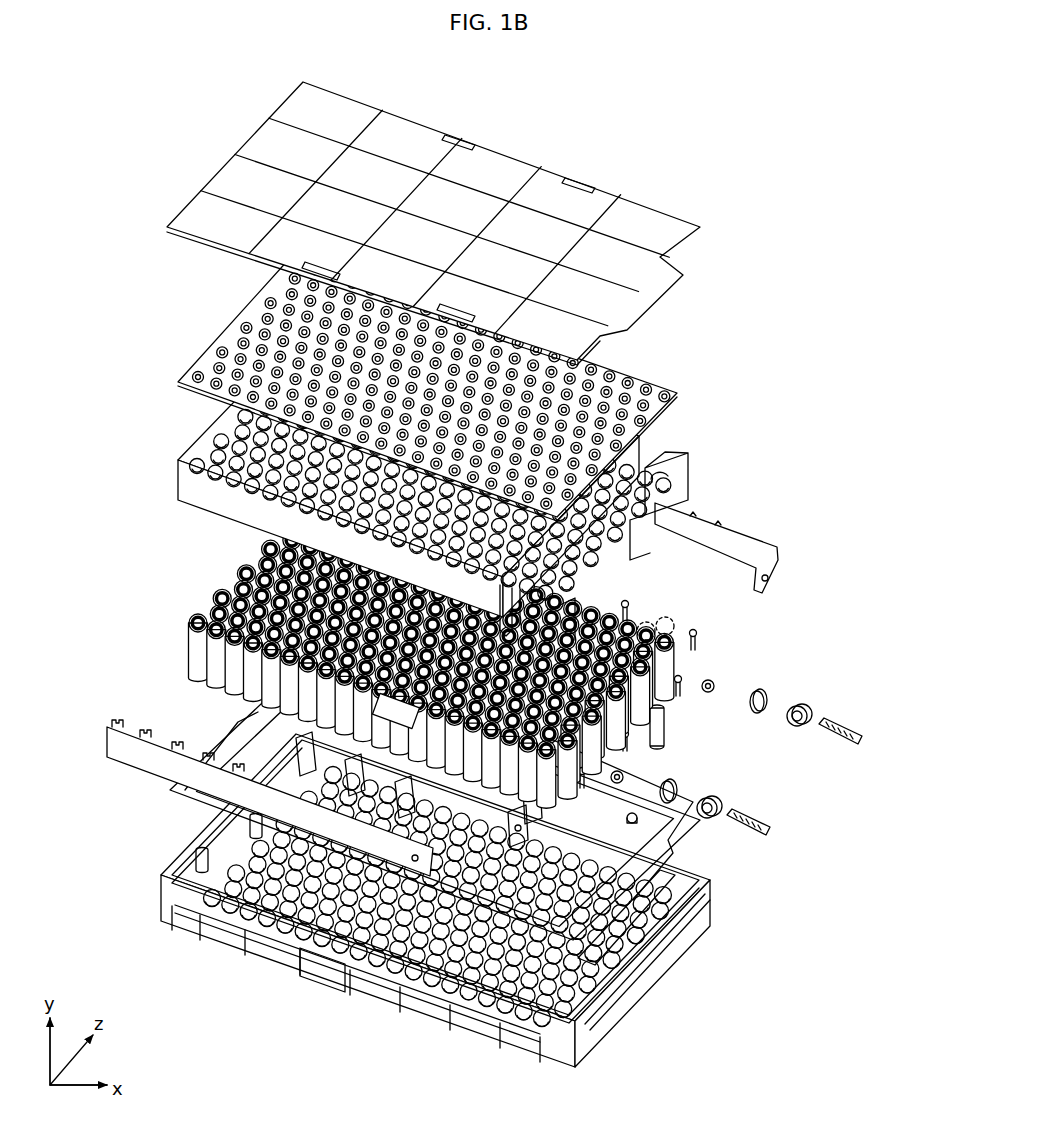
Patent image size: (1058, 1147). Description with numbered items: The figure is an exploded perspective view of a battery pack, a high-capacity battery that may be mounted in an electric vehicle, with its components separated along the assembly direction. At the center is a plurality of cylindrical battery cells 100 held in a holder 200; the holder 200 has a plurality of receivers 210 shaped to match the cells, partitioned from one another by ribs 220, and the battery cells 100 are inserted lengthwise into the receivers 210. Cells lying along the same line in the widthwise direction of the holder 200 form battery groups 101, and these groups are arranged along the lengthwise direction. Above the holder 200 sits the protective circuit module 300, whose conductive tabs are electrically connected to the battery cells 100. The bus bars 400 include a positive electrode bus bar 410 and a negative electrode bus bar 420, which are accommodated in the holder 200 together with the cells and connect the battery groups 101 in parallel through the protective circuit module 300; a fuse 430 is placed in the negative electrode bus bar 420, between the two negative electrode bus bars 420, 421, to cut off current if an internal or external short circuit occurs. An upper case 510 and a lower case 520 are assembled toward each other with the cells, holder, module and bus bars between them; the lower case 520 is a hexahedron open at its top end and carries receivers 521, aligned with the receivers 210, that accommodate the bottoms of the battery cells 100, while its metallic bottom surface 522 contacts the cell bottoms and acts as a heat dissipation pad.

The battery cells 100 is at (392, 658).
The battery groups 101 is at (666, 624).
The holder 200 is at (455, 479).
The receivers 210 is at (207, 448).
The ribs 220 is at (670, 466).
The protective circuit module 300 is at (688, 382).
The bus bars 400 is at (519, 799).
The positive electrode bus bar 410 is at (787, 558).
The negative electrode bus bar 420 is at (487, 859).
The negative electrode bus bar 421 is at (519, 833).
The fuse 430 is at (432, 872).
The upper case 510 is at (652, 212).
The lower case 520 is at (462, 900).
The receivers 521 is at (583, 957).
The bottom surface 522 is at (347, 954).